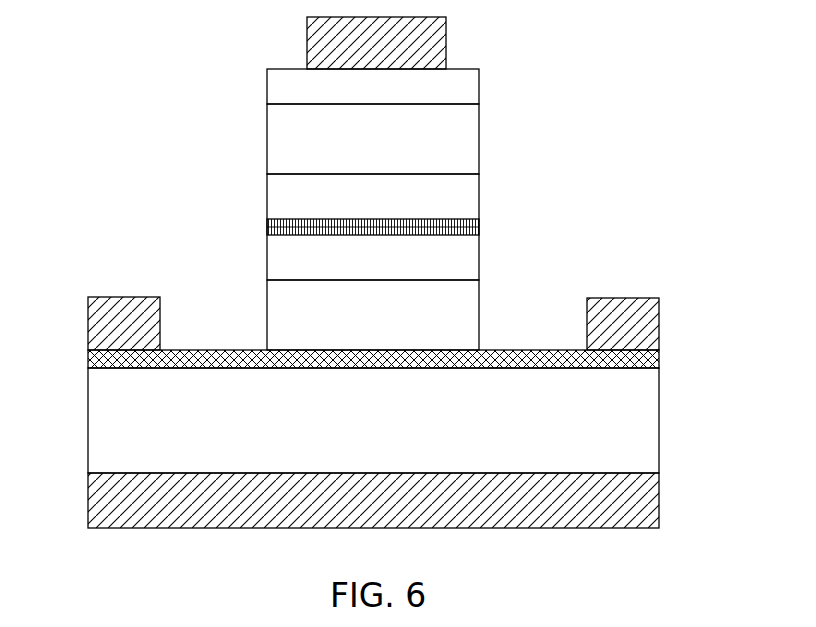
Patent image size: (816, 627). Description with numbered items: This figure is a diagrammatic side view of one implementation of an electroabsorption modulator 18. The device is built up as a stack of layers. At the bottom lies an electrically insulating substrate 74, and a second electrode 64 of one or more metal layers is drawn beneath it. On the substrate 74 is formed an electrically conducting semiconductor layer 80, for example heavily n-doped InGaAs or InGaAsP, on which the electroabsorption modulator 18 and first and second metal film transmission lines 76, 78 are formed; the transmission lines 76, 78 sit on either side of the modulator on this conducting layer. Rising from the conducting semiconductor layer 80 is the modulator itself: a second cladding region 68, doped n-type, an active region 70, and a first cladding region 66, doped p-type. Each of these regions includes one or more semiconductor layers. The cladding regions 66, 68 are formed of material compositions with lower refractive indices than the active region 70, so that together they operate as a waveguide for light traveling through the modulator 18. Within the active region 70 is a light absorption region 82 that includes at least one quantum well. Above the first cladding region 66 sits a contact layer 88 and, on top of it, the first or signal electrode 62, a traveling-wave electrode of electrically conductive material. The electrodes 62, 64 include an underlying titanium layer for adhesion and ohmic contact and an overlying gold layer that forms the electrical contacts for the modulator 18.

The electroabsorption modulator 18 is at (658, 122).
The first electrode 62 is at (307, 43).
The contact layer 88 is at (267, 87).
The first cladding region 66 is at (267, 140).
The active region 70 is at (258, 280).
The light absorption region 82 is at (479, 228).
The second cladding region 68 is at (267, 325).
The first metal film transmission line 76 is at (88, 312).
The second metal film transmission line 78 is at (658, 312).
The electrically conducting semiconductor layer 80 is at (88, 355).
The substrate 74 is at (659, 412).
The second electrode 64 is at (658, 502).